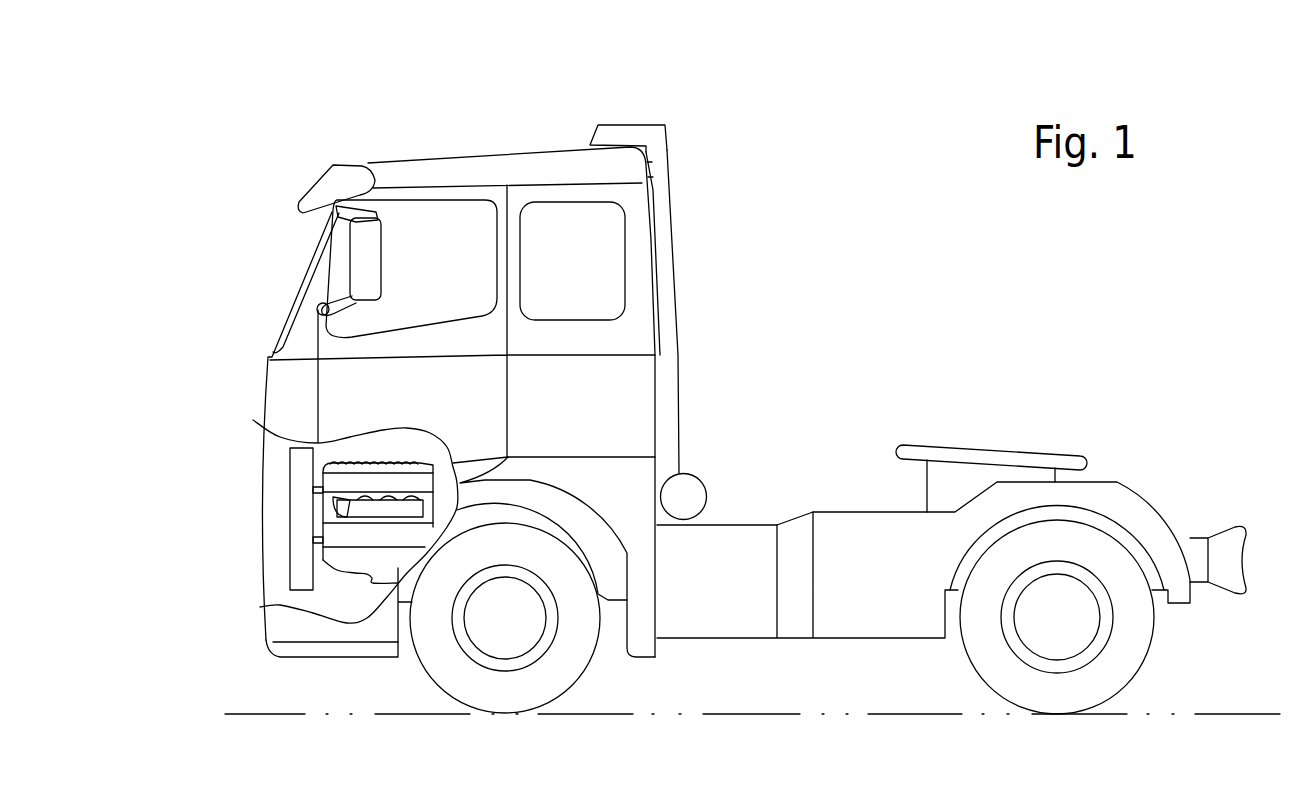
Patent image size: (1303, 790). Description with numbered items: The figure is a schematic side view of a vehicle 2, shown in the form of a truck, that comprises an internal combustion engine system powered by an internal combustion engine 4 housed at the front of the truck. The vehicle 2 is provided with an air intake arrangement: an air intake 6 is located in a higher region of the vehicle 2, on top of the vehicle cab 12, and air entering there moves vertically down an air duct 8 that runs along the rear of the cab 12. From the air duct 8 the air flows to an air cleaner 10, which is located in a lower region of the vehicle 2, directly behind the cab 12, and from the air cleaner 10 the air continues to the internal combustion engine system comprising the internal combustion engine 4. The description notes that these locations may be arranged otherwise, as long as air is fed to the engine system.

The vehicle 2 is at (827, 102).
The internal combustion engine 4 is at (337, 502).
The air intake 6 is at (592, 138).
The air duct 8 is at (670, 337).
The air cleaner 10 is at (682, 495).
The vehicle cab 12 is at (377, 378).